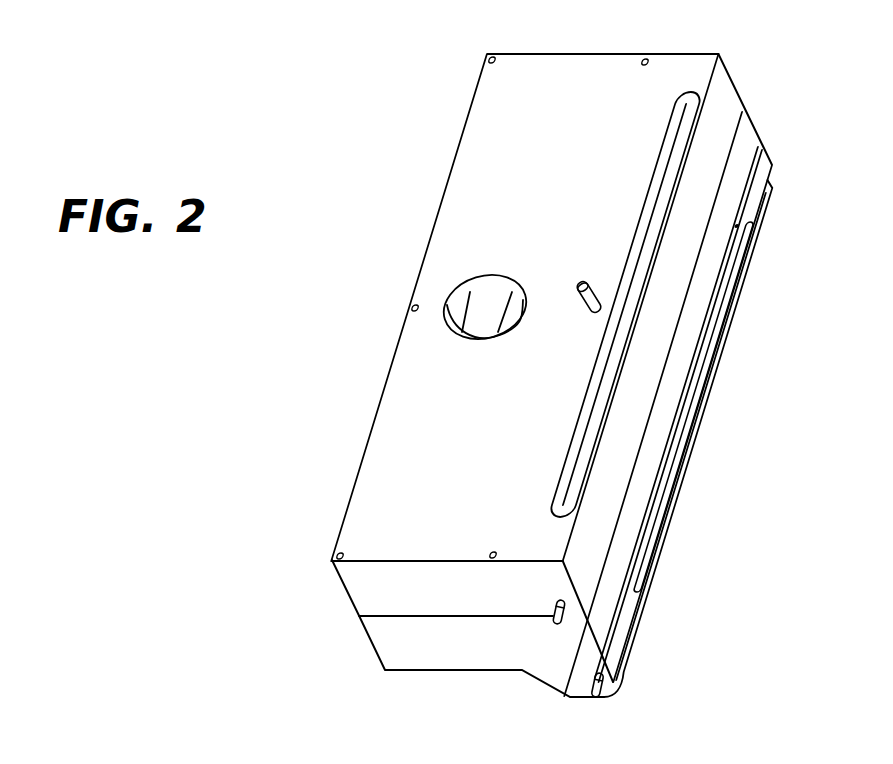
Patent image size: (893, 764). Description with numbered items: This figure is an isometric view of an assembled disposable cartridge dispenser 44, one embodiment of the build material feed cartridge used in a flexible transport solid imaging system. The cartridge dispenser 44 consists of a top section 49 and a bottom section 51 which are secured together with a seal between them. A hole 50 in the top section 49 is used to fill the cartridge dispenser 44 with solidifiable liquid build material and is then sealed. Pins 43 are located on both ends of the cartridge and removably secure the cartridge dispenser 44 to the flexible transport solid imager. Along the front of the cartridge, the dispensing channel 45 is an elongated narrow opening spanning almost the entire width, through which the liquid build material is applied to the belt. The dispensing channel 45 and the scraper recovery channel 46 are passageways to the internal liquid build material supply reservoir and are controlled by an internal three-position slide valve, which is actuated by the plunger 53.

The pins 43 is at (565, 613).
The disposable cartridge dispenser 44 is at (730, 36).
The dispensing channel 45 is at (718, 312).
The scraper recovery channel 46 is at (677, 134).
The top section 49 is at (368, 538).
The hole 50 is at (488, 305).
The bottom section 51 is at (388, 641).
The plunger 53 is at (583, 282).